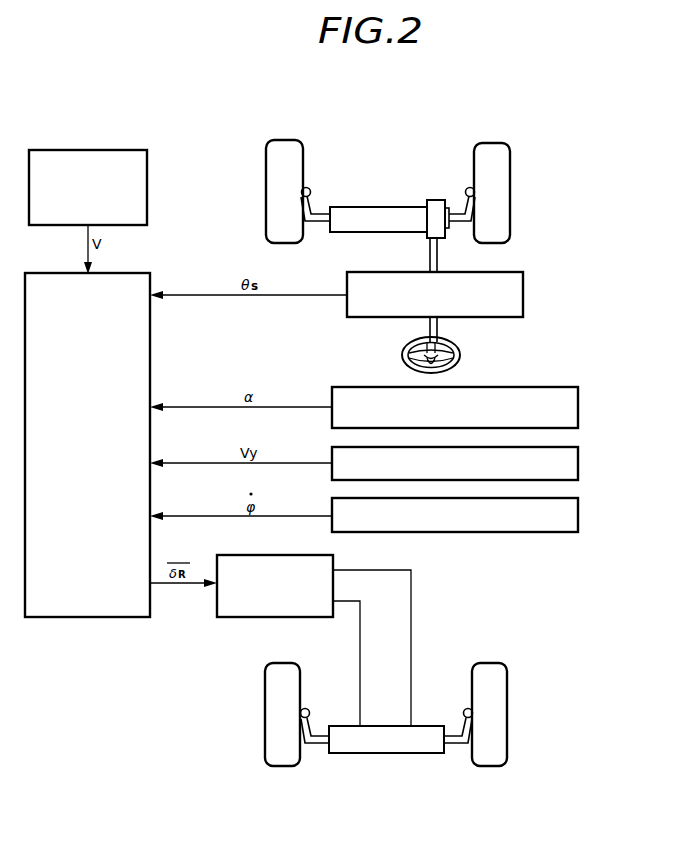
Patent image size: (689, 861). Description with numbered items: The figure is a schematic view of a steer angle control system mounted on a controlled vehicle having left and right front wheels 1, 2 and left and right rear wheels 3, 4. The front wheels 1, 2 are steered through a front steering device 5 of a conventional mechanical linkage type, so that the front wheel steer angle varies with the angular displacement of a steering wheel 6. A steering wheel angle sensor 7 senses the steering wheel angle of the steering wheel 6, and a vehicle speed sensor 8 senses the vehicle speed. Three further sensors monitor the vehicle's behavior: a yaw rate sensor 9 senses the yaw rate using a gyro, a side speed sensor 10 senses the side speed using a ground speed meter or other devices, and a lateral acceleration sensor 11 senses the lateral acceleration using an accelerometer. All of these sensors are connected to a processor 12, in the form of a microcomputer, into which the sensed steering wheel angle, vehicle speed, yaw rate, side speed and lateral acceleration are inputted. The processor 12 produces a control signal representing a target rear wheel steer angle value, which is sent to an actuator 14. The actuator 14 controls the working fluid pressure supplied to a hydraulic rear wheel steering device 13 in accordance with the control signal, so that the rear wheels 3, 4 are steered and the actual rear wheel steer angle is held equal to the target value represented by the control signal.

The left front wheel 1 is at (303, 144).
The right front wheel 2 is at (509, 148).
The left rear wheel 3 is at (282, 766).
The right rear wheel 4 is at (488, 766).
The front steering device 5 is at (380, 207).
The steering wheel 6 is at (461, 355).
The steering wheel angle sensor 7 is at (523, 287).
The vehicle speed sensor 8 is at (82, 150).
The yaw rate sensor 9 is at (578, 516).
The side speed sensor 10 is at (578, 465).
The lateral acceleration sensor 11 is at (578, 412).
The processor 12 is at (150, 279).
The hydraulic rear wheel steering device 13 is at (384, 753).
The actuator 14 is at (245, 618).